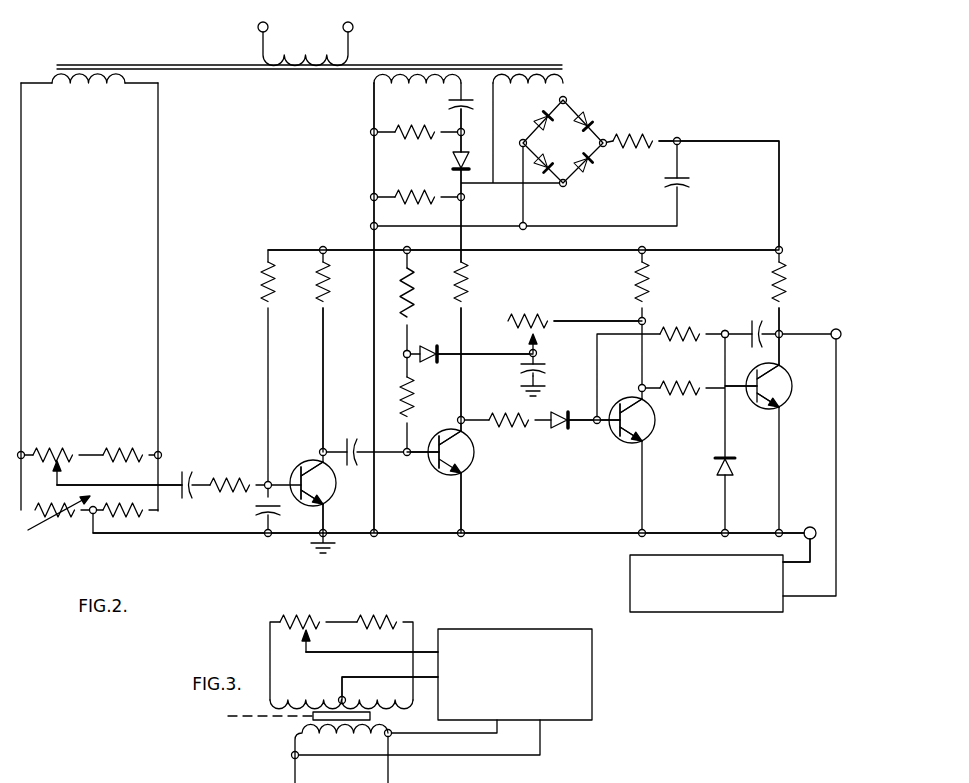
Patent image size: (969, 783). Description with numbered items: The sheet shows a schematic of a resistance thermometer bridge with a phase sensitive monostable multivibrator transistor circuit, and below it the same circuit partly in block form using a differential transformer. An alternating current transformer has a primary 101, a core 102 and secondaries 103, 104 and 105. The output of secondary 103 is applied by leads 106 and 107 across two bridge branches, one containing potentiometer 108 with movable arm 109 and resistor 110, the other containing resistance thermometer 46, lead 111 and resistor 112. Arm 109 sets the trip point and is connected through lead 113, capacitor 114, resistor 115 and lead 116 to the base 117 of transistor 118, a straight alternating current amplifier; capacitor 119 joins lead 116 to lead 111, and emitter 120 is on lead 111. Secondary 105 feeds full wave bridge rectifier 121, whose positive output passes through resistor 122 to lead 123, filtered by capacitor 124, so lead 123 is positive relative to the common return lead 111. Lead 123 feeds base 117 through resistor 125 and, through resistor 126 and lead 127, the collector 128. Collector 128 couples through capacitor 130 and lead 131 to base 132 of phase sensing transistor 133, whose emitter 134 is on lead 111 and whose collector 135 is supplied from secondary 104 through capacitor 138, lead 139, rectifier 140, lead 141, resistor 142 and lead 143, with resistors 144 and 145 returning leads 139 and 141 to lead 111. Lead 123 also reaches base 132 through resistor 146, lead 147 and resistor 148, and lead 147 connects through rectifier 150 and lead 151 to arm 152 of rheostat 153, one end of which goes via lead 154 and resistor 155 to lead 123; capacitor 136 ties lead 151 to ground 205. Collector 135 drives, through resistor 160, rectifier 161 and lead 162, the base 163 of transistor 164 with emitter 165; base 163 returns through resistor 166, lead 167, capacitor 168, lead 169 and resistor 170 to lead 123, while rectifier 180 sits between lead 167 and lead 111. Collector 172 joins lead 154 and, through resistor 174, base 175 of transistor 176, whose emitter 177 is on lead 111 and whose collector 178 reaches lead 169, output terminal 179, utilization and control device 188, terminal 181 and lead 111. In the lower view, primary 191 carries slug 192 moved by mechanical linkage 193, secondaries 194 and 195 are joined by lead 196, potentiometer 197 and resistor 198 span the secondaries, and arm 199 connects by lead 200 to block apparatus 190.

In FIG. 2, the resistance thermometer 46 is at (59, 522).
In FIG. 2, the primary 101 is at (303, 52).
In FIG. 2, the core 102 is at (207, 65).
In FIG. 2, the secondary 103 is at (104, 88).
In FIG. 2, the secondary 104 is at (434, 83).
In FIG. 2, the secondary 105 is at (530, 84).
In FIG. 2, the lead 106 is at (22, 313).
In FIG. 2, the lead 107 is at (157, 262).
In FIG. 2, the potentiometer 108 is at (62, 447).
In FIG. 2, the movable contact or arm 109 is at (56, 478).
In FIG. 2, the resistor 110 is at (123, 447).
In FIG. 2, the lead 111 is at (213, 537).
In FIG. 2, the resistor 112 is at (143, 516).
In FIG. 2, the lead 113 is at (120, 485).
In FIG. 2, the capacitor 114 is at (190, 472).
In FIG. 2, the resistor 115 is at (237, 478).
In FIG. 2, the lead 116 is at (300, 502).
In FIG. 2, the base 117 is at (300, 478).
In FIG. 2, the transistor 118 is at (336, 483).
In FIG. 2, the capacitor 119 is at (258, 512).
In FIG. 2, the emitter 120 is at (330, 503).
In FIG. 2, the full wave bridge rectifier 121 is at (548, 151).
In FIG. 2, the resistor 122 is at (645, 141).
In FIG. 2, the lead 123 is at (300, 250).
In FIG. 2, the capacitor 124 is at (692, 184).
In FIG. 2, the resistor 125 is at (262, 302).
In FIG. 2, the resistor 126 is at (320, 300).
In FIG. 2, the lead 127 is at (326, 385).
In FIG. 2, the collector 128 is at (312, 462).
In FIG. 2, the capacitor 130 is at (352, 440).
In FIG. 2, the lead 131 is at (412, 456).
In FIG. 2, the base 132 is at (434, 466).
In FIG. 2, the transistor 133 is at (474, 466).
In FIG. 2, the emitter 134 is at (452, 478).
In FIG. 2, the collector 135 is at (450, 430).
In FIG. 2, the capacitor 136 is at (546, 369).
In FIG. 2, the capacitor 138 is at (466, 103).
In FIG. 2, the lead 139 is at (463, 137).
In FIG. 2, the rectifier 140 is at (466, 176).
In FIG. 2, the lead 141 is at (463, 216).
In FIG. 2, the resistor 142 is at (467, 280).
In FIG. 2, the lead 143 is at (463, 388).
In FIG. 2, the resistor 144 is at (422, 140).
In FIG. 2, the resistor 145 is at (413, 190).
In FIG. 2, the resistor 146 is at (413, 292).
In FIG. 2, the lead 147 is at (404, 356).
In FIG. 2, the resistor 148 is at (413, 397).
In FIG. 2, the rectifier 150 is at (432, 346).
In FIG. 2, the lead 151 is at (484, 353).
In FIG. 2, the arm 152 is at (538, 351).
In FIG. 2, the rheostat 153 is at (542, 313).
In FIG. 2, the lead 154 is at (597, 321).
In FIG. 2, the resistor 155 is at (648, 276).
In FIG. 2, the resistor 160 is at (496, 428).
In FIG. 2, the rectifier 161 is at (558, 429).
In FIG. 2, the lead 162 is at (605, 425).
In FIG. 2, the base 163 is at (624, 444).
In FIG. 2, the transistor 164 is at (655, 420).
In FIG. 2, the emitter 165 is at (650, 437).
In FIG. 2, the resistor 166 is at (684, 326).
In FIG. 2, the lead 167 is at (726, 330).
In FIG. 2, the capacitor 168 is at (756, 348).
In FIG. 2, the lead 169 is at (784, 310).
In FIG. 2, the resistor 170 is at (786, 270).
In FIG. 2, the collector 172 is at (630, 398).
In FIG. 2, the resistor 174 is at (678, 380).
In FIG. 2, the base 175 is at (727, 405).
In FIG. 2, the transistor 176 is at (791, 390).
In FIG. 2, the emitter 177 is at (782, 405).
In FIG. 2, the collector 178 is at (782, 373).
In FIG. 2, the output terminal 179 is at (836, 329).
In FIG. 2, the rectifier 180 is at (717, 470).
In FIG. 2, the terminal 181 is at (810, 527).
In FIG. 2, the utilization and control device 188 is at (765, 612).
In FIG. 3, the apparatus 190 is at (548, 629).
In FIG. 3, the primary 191 is at (346, 735).
In FIG. 3, the slug 192 is at (372, 716).
In FIG. 3, the mechanical linkage 193 is at (262, 718).
In FIG. 3, the secondary 194 is at (318, 699).
In FIG. 3, the secondary 195 is at (384, 700).
In FIG. 3, the lead 196 is at (386, 677).
In FIG. 3, the potentiometer 197 is at (298, 616).
In FIG. 3, the resistor 198 is at (380, 616).
In FIG. 3, the arm 199 is at (303, 653).
In FIG. 3, the lead 200 is at (372, 652).
In FIG. 2, the ground 205 is at (335, 553).